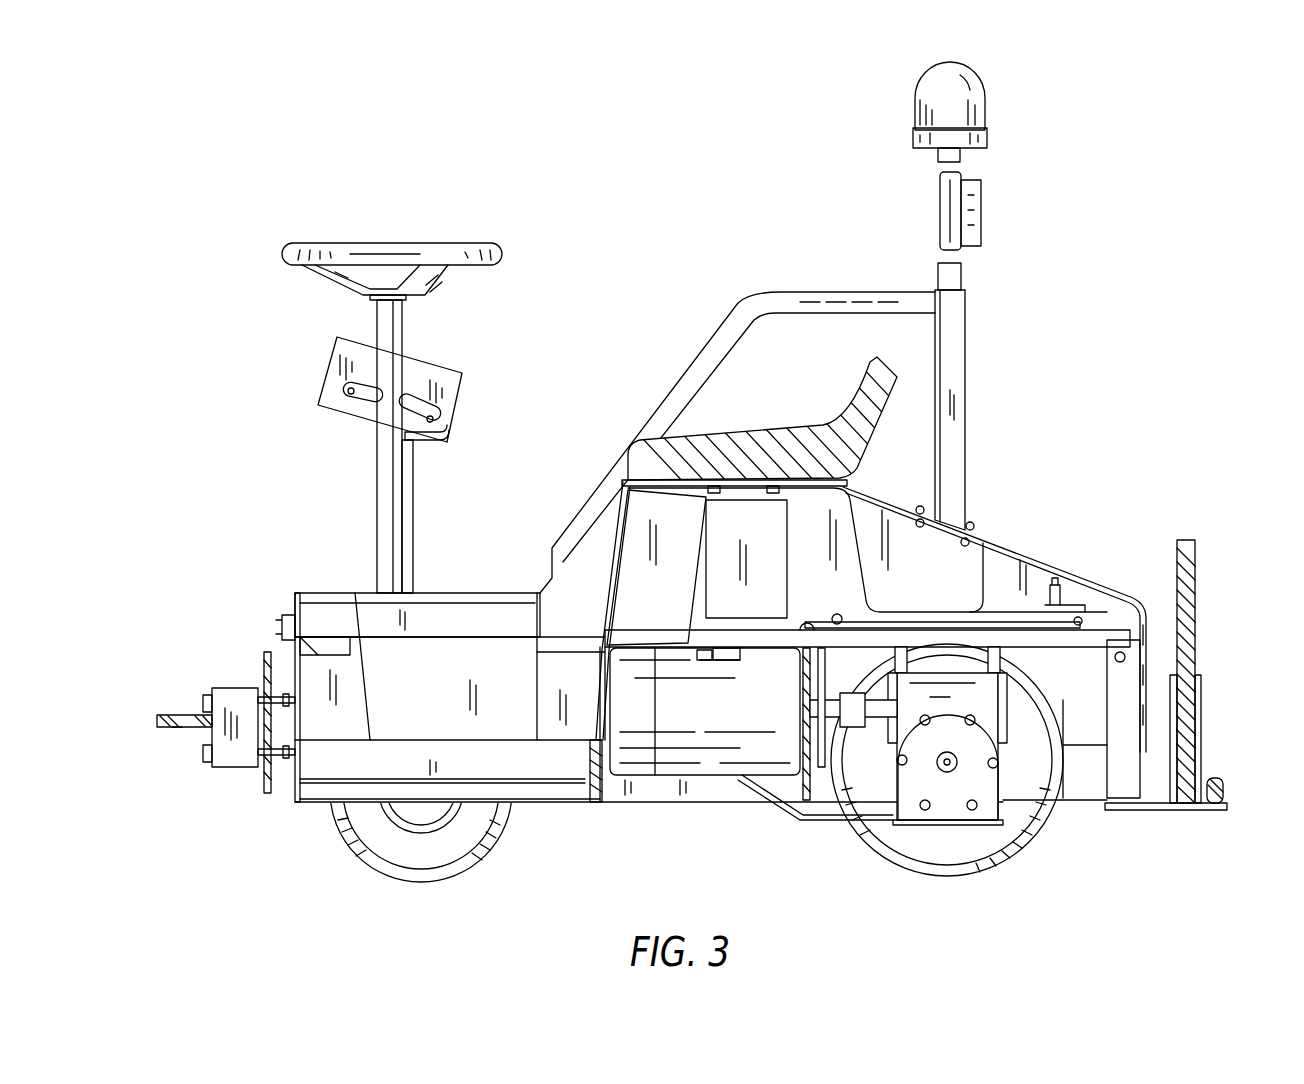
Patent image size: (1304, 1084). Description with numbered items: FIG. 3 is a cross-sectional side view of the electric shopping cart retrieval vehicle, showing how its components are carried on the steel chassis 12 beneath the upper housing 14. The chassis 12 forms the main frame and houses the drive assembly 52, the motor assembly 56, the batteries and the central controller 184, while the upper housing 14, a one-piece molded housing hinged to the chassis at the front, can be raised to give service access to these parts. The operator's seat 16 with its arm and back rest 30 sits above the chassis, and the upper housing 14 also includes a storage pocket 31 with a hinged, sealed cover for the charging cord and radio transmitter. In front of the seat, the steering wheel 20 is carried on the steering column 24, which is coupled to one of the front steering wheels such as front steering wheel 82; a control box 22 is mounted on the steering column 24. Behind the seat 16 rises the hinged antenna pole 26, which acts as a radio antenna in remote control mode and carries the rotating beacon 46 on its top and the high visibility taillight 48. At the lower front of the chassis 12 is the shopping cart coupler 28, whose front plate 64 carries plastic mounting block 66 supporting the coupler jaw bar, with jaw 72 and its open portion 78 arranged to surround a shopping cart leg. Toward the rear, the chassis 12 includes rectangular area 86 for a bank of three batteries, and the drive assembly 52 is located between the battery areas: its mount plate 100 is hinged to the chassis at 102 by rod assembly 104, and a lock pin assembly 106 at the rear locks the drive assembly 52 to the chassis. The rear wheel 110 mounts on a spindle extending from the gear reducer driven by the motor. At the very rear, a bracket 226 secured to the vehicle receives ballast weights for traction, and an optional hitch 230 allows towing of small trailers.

The steel chassis 12 is at (533, 793).
The upper housing 14 is at (291, 590).
The seat 16 is at (823, 425).
The steering wheel 20 is at (285, 251).
The control box 22 is at (325, 371).
The steering column 24 is at (374, 317).
The antenna pole 26 is at (940, 200).
The shopping cart coupler 28 is at (194, 739).
The arm and back rest 30 is at (780, 292).
The storage pocket 31 is at (970, 557).
The rotating beacon 46 is at (986, 108).
The taillight 48 is at (957, 211).
The drive assembly 52 is at (1010, 775).
The motor assembly 56 is at (705, 756).
The front plate 64 is at (265, 795).
The mounting block 66 is at (240, 768).
The jaw 72 is at (160, 718).
The open portion 78 is at (177, 735).
The front steering wheel 82 is at (455, 873).
The rectangular area 86 is at (1080, 802).
The mount plate 100 is at (1095, 638).
The hinge 102 is at (707, 661).
The rod assembly 104 is at (727, 661).
The lock pin assembly 106 is at (1125, 657).
The rear wheel 110 is at (995, 873).
The central controller 184 is at (622, 480).
The bracket 226 is at (1183, 811).
The hitch 230 is at (1223, 781).